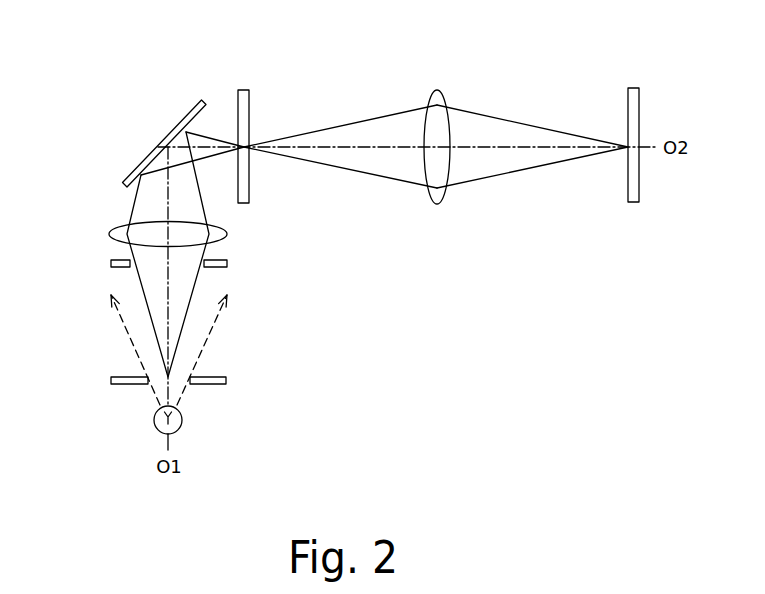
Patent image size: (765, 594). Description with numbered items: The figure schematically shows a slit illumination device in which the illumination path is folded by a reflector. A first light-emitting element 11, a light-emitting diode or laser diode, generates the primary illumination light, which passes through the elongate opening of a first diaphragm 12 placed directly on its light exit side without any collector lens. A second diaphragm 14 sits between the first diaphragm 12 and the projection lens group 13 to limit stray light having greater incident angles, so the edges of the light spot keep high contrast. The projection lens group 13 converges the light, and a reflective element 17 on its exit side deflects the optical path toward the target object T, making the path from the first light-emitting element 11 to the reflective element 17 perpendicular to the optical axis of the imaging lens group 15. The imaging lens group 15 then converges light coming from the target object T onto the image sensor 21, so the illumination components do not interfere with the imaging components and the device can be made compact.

The first light-emitting element 11 is at (155, 422).
The first diaphragm 12 is at (110, 380).
The projection lens group 13 is at (110, 234).
The second diaphragm 14 is at (110, 263).
The imaging lens group 15 is at (437, 90).
The reflective element 17 is at (151, 157).
The image sensor 21 is at (633, 88).
The target object T is at (244, 89).